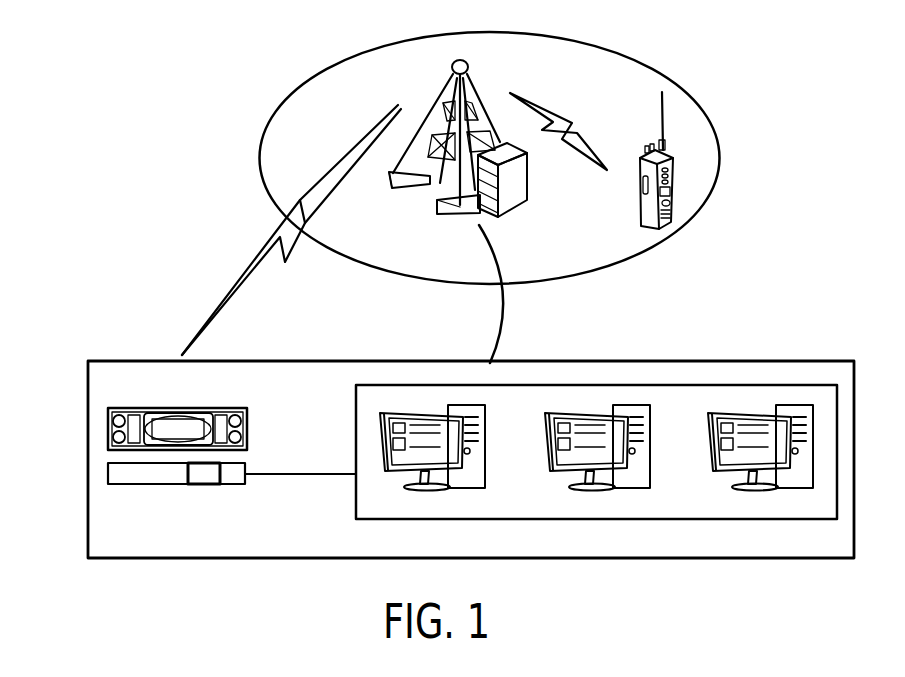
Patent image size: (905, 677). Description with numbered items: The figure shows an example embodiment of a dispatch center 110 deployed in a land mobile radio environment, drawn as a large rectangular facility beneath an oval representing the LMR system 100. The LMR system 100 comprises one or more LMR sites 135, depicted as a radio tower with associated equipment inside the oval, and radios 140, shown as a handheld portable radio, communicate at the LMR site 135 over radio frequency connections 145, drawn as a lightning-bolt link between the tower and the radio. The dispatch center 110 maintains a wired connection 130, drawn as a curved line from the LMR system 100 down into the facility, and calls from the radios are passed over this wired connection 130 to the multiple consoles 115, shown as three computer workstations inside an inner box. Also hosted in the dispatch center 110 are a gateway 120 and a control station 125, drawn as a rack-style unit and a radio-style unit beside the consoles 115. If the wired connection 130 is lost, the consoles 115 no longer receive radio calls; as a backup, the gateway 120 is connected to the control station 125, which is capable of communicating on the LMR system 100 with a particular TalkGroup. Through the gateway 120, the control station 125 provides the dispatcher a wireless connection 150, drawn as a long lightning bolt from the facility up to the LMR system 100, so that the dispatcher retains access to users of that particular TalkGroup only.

The LMR system 100 is at (247, 157).
The dispatch center 110 is at (88, 508).
The consoles 115 is at (356, 487).
The gateway 120 is at (230, 484).
The control station 125 is at (247, 427).
The wired connection 130 is at (505, 312).
The LMR site 135 is at (488, 86).
The radios 140 is at (640, 203).
The radio frequency (RF) connections 145 is at (572, 123).
The wireless connection 150 is at (245, 285).